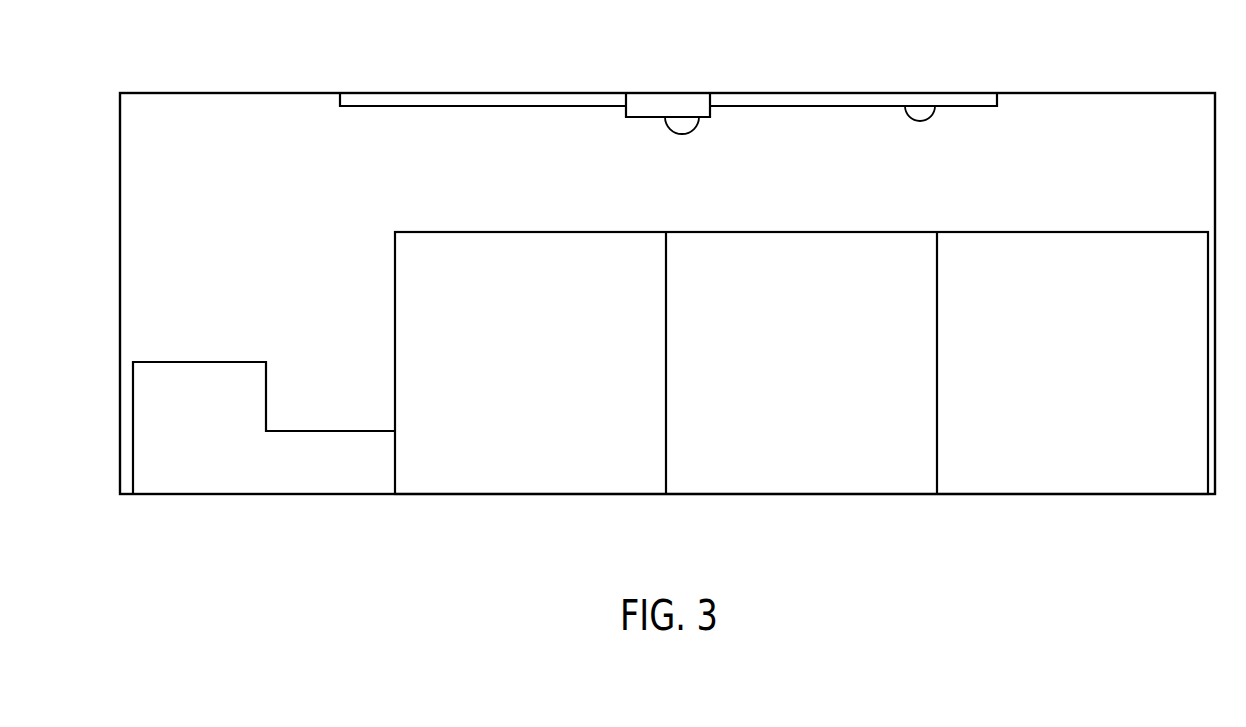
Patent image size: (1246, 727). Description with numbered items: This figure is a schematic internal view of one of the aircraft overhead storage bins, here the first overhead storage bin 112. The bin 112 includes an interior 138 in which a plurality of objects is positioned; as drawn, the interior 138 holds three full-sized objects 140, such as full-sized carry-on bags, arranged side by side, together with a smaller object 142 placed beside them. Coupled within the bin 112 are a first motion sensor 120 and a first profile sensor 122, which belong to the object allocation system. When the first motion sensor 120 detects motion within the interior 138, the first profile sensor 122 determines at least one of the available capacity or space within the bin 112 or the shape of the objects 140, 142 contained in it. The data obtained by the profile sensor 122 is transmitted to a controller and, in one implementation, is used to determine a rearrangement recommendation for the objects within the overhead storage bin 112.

The first overhead storage bin 112 is at (1150, 93).
The first motion sensor 120 is at (698, 126).
The first profile sensor 122 is at (930, 110).
The interior 138 is at (820, 185).
The full-sized objects 140 is at (550, 375).
The smaller object 142 is at (218, 442).